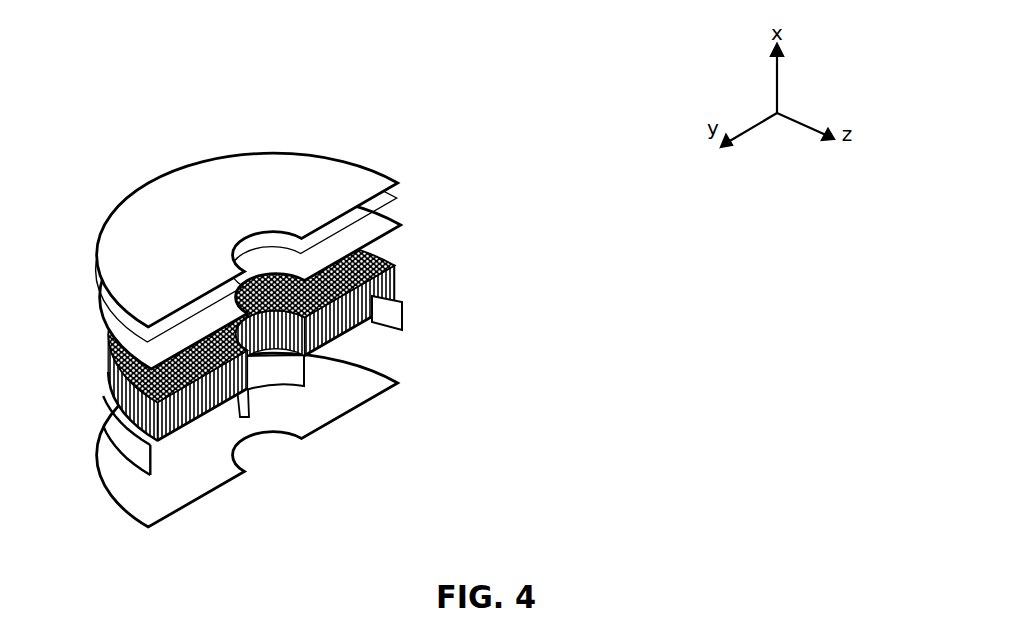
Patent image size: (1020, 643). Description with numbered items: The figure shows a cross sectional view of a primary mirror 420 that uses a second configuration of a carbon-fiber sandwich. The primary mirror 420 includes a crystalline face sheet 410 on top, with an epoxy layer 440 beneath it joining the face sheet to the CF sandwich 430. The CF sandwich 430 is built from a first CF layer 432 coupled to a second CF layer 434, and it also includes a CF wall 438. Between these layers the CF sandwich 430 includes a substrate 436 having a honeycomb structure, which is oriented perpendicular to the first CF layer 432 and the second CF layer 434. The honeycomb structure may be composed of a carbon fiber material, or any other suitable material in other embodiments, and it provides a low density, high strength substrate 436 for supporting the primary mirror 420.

The primary mirror 420 is at (280, 512).
The crystalline face sheet 410 is at (314, 182).
The epoxy layer 440 is at (396, 199).
The CF sandwich 430 is at (478, 361).
The first CF layer 432 is at (362, 233).
The substrate 436 is at (392, 289).
The CF wall 438 is at (380, 322).
The second CF layer 434 is at (312, 412).